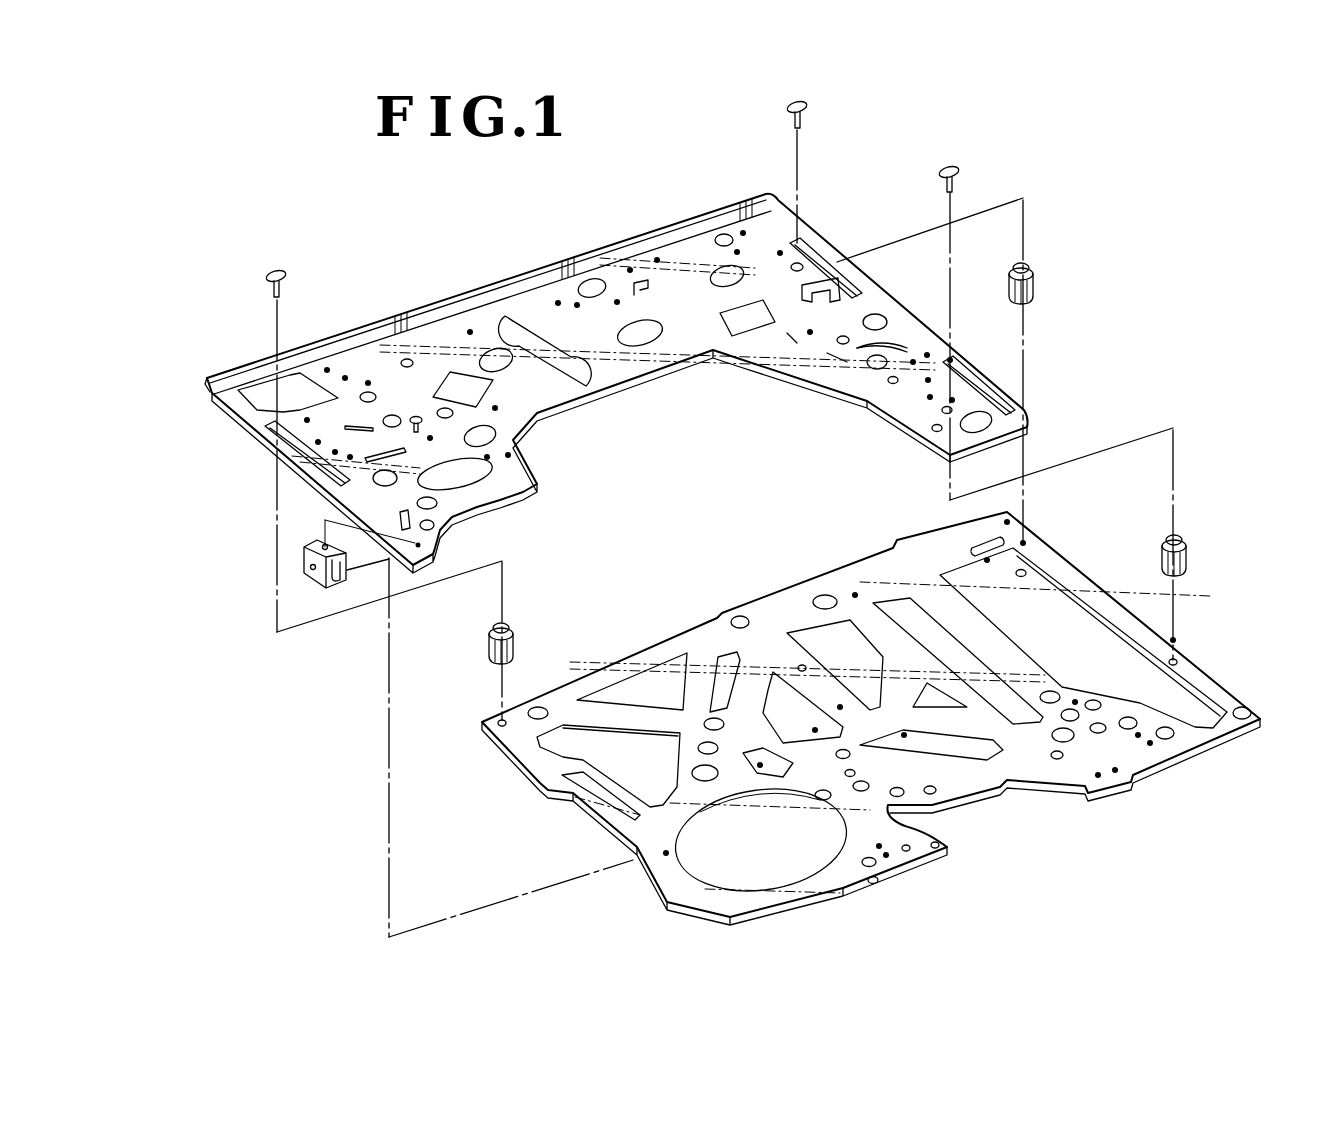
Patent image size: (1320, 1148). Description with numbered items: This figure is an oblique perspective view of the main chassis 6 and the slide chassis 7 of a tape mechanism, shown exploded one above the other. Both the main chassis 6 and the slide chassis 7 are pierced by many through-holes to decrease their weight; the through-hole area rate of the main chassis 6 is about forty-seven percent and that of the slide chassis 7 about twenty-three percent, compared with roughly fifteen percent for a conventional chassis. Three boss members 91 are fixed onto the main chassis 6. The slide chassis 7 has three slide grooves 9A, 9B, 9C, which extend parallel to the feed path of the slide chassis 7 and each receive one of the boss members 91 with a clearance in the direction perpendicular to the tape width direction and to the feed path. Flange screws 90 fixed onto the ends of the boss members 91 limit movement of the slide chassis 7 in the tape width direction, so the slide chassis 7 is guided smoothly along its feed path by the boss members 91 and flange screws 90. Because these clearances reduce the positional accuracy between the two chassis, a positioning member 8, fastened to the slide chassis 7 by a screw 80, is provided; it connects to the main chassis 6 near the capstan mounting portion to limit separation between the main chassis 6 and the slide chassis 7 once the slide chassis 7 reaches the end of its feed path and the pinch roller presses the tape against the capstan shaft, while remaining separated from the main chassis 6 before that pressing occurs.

The main chassis 6 is at (1037, 765).
The slide chassis 7 is at (453, 306).
The positioning member 8 is at (304, 568).
The slide groove 9A is at (272, 447).
The slide groove 9B is at (822, 252).
The slide groove 9C is at (998, 396).
The screw 80 is at (416, 416).
The flange screw 90 is at (278, 272).
The boss member 91 is at (513, 636).